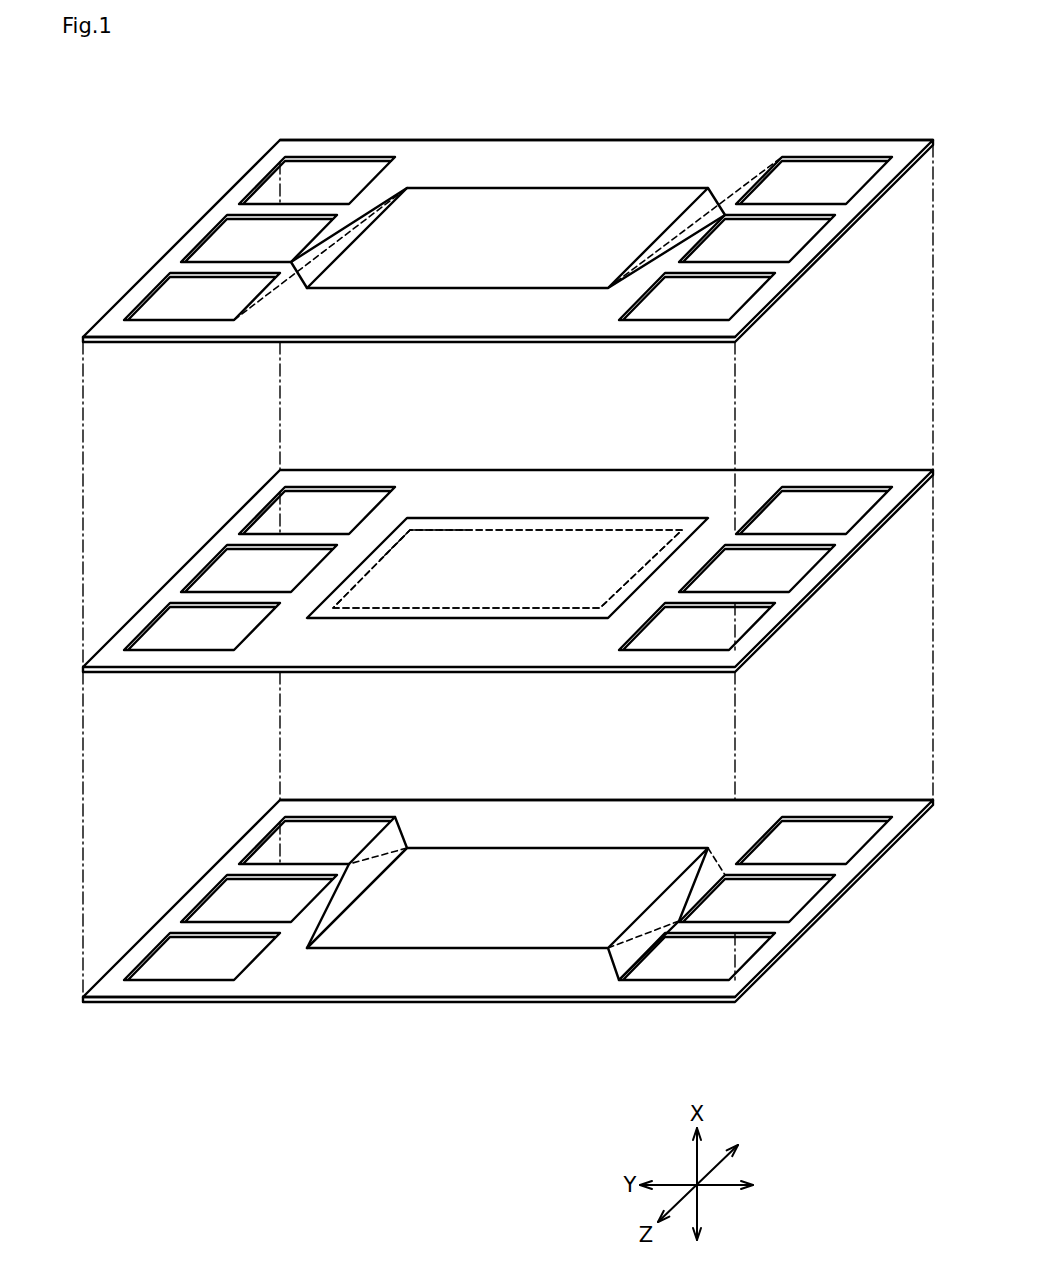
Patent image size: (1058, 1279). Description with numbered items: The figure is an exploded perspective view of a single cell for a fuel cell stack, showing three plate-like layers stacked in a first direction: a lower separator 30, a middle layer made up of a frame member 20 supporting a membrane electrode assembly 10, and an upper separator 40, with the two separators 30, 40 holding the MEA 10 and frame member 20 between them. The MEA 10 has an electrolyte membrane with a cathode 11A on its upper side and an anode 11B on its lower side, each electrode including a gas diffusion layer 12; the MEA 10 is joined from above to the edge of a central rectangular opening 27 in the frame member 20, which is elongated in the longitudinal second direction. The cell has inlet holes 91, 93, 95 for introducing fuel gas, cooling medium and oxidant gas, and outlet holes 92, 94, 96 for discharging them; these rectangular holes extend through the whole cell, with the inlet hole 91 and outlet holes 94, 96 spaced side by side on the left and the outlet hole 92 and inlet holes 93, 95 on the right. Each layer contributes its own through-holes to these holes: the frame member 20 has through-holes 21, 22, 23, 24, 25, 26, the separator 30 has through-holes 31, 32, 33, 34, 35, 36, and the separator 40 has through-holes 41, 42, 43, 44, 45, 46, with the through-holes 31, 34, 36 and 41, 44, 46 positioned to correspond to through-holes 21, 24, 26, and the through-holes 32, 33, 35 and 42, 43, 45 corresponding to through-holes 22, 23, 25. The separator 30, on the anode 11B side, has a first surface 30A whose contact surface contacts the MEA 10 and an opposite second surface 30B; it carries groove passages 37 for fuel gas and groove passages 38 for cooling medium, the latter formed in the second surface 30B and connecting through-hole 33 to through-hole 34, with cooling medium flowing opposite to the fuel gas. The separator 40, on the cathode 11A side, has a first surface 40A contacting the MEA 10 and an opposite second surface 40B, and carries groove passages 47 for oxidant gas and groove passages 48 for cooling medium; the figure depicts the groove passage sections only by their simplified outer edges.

The membrane electrode assembly 10 is at (641, 502).
The gas diffusion layer 12 is at (507, 571).
The cathode 11A is at (514, 556).
The anode 11B is at (503, 583).
The frame member 20 is at (767, 455).
The through-hole 21 is at (318, 500).
The through-hole 22 is at (750, 620).
The through-hole 23 is at (808, 560).
The through-hole 24 is at (204, 575).
The through-hole 25 is at (858, 512).
The through-hole 26 is at (140, 635).
The opening 27 is at (410, 542).
The separator 30 is at (767, 785).
The first surface 30A is at (565, 815).
The second surface 30B is at (455, 970).
The through-hole 31 is at (303, 828).
The through-hole 32 is at (750, 950).
The through-hole 33 is at (808, 890).
The through-hole 34 is at (204, 905).
The through-hole 35 is at (845, 850).
The through-hole 36 is at (140, 965).
The groove passages 37 is at (406, 832).
The groove passages 38 is at (292, 935).
The separator 40 is at (767, 125).
The first surface 40A is at (466, 310).
The second surface 40B is at (590, 155).
The through-hole 41 is at (258, 192).
The through-hole 42 is at (750, 290).
The through-hole 43 is at (808, 230).
The through-hole 44 is at (204, 245).
The through-hole 45 is at (862, 172).
The through-hole 46 is at (140, 305).
The groove passages 47 is at (293, 292).
The groove passages 48 is at (396, 187).
The inlet hole 91 is at (317, 478).
The outlet hole 92 is at (723, 650).
The inlet hole 93 is at (782, 591).
The outlet hole 94 is at (249, 536).
The inlet hole 95 is at (834, 475).
The outlet hole 96 is at (192, 593).